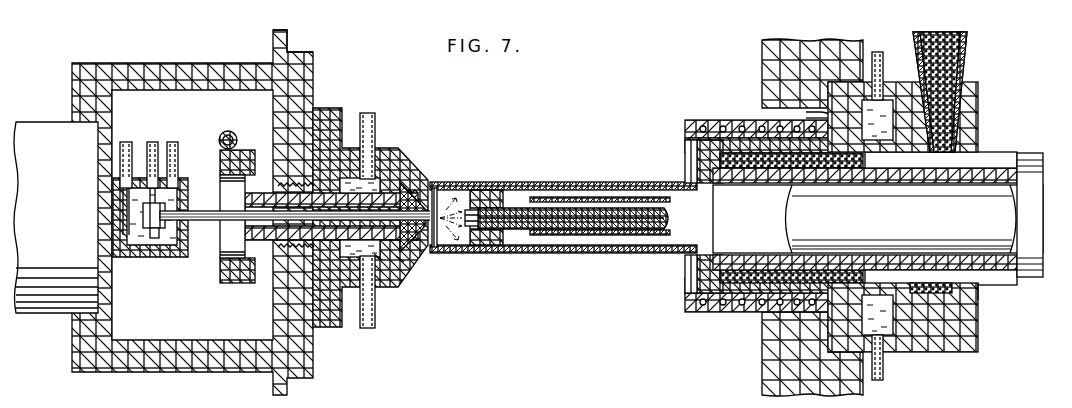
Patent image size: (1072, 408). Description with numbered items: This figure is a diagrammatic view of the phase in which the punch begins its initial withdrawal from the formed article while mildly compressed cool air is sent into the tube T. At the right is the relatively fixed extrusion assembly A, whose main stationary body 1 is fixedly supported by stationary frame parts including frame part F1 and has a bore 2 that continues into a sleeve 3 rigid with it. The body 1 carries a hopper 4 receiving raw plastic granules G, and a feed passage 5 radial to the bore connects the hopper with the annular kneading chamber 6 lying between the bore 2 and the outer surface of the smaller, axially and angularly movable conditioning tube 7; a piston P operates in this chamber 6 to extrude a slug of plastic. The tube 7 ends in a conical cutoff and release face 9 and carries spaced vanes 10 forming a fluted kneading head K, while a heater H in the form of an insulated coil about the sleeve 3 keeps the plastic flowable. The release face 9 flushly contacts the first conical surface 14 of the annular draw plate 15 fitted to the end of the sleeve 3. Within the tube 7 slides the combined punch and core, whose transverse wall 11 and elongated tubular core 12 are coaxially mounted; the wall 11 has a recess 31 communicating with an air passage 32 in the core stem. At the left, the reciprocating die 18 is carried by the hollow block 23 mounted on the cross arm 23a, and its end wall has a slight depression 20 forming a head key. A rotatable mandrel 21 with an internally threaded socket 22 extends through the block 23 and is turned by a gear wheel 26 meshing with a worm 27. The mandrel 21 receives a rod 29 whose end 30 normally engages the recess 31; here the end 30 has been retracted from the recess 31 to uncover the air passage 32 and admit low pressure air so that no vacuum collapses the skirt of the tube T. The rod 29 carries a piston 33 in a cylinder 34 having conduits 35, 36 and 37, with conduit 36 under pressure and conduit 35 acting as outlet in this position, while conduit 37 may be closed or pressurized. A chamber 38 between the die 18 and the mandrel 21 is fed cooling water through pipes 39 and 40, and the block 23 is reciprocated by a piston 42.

The main stationary body 1 is at (979, 100).
The bore 2 is at (978, 290).
The sleeve 3 is at (758, 143).
The hopper 4 is at (967, 45).
The feed passage 5 is at (968, 152).
The annular kneading chamber 6 is at (945, 292).
The plastic material conditioning tube 7 is at (978, 168).
The conical material cutoff and release face 9 is at (791, 216).
The vanes 10 is at (812, 138).
The transverse wall 11 is at (468, 210).
The tubular barrel-like core 12 is at (531, 183).
The first conical surface 14 is at (697, 153).
The annular draw plate 15 is at (690, 143).
The reciprocating die 18 is at (405, 165).
The depression 20 is at (418, 190).
The rotatable mandrel 21 is at (383, 190).
The internally threaded socket 22 is at (422, 246).
The hollow reciprocating block 23 is at (130, 362).
The cross arm 23a is at (300, 64).
The gear wheel 26 is at (236, 282).
The worm 27 is at (231, 130).
The rod 29 is at (214, 210).
The end of rod 30 is at (400, 258).
The recess 31 is at (438, 200).
The air passage 32 is at (486, 205).
The piston 33 is at (150, 228).
The cylinder 34 is at (166, 256).
The conduit 35 is at (153, 141).
The conduit 36 is at (174, 140).
The conduit 37 is at (126, 140).
The chamber 38 is at (378, 256).
The pipe 39 is at (373, 113).
The pipe 40 is at (375, 326).
The piston 42 is at (56, 217).
The extrusion assembly A is at (976, 92).
The raw plastic material G is at (947, 35).
The heater H is at (716, 125).
The fluted kneading head K is at (806, 118).
The piston P is at (1028, 155).
The stem S is at (719, 219).
The tube T is at (555, 183).
The stationary frame part F1 is at (778, 48).